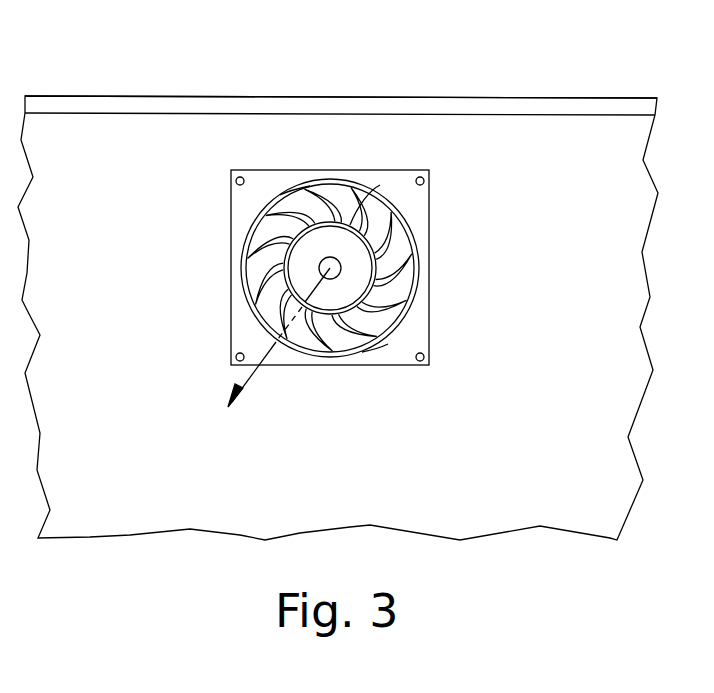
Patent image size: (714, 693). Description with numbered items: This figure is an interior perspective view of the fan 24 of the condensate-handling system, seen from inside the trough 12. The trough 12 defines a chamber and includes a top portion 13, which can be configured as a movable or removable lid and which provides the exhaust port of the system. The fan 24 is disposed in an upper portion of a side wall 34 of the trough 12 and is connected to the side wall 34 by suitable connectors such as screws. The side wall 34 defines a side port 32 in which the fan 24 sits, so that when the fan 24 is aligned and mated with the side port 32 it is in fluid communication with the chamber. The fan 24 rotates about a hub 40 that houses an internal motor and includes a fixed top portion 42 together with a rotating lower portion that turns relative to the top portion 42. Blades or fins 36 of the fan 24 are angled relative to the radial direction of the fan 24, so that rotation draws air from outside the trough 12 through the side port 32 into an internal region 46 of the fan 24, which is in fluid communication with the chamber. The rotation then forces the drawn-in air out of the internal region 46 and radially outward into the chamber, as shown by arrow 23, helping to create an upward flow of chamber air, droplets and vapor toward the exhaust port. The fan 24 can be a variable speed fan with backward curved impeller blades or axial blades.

The trough 12 is at (150, 80).
The top portion 13 is at (455, 78).
The arrow 23 is at (252, 383).
The fan 24 is at (413, 222).
The side port 32 is at (248, 238).
The side wall 34 is at (130, 367).
The blades or fins 36 is at (402, 272).
The hub 40 is at (285, 272).
The fixed top portion 42 is at (350, 225).
The internal region 46 is at (295, 202).